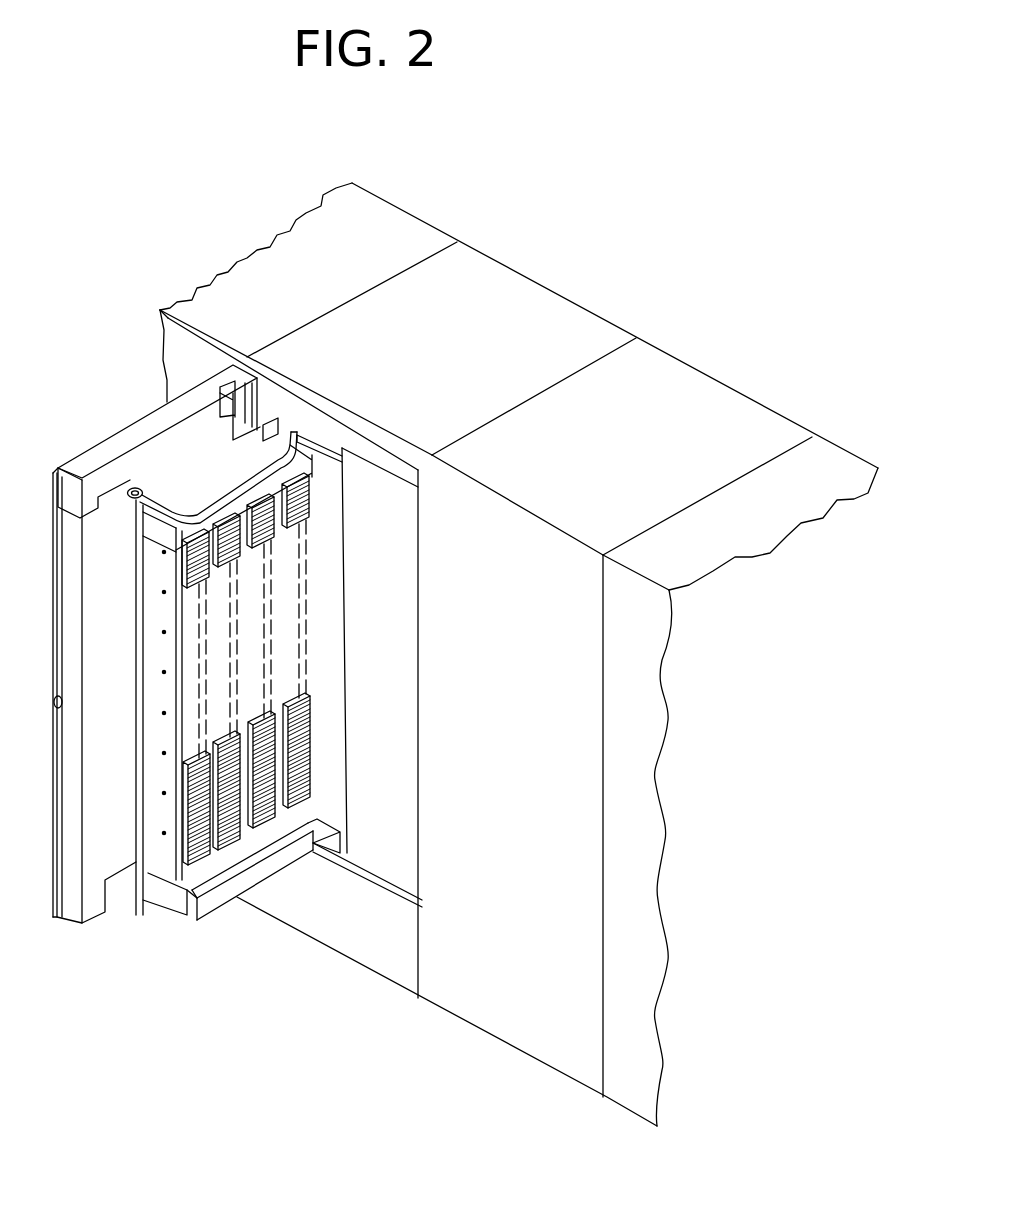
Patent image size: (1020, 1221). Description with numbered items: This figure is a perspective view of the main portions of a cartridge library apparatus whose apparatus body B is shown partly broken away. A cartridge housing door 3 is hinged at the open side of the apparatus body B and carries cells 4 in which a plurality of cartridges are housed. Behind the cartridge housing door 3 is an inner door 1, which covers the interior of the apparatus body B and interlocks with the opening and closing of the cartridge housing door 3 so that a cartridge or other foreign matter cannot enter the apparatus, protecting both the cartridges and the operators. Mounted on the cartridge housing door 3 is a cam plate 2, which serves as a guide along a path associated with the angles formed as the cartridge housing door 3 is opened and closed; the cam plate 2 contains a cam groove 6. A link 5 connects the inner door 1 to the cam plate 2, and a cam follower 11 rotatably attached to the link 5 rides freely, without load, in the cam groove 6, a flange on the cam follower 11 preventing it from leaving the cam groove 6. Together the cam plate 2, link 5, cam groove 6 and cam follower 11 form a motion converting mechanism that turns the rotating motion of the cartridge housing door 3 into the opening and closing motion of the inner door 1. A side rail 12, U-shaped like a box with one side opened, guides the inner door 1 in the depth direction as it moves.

The apparatus body B is at (486, 300).
The inner door 1 is at (397, 862).
The cam plate 2 is at (220, 468).
The cartridge housing door 3 is at (123, 430).
The cells 4 is at (198, 583).
The link 5 is at (318, 455).
The cam groove 6 is at (193, 503).
The cam follower 11 is at (304, 422).
The side rail 12 is at (340, 866).